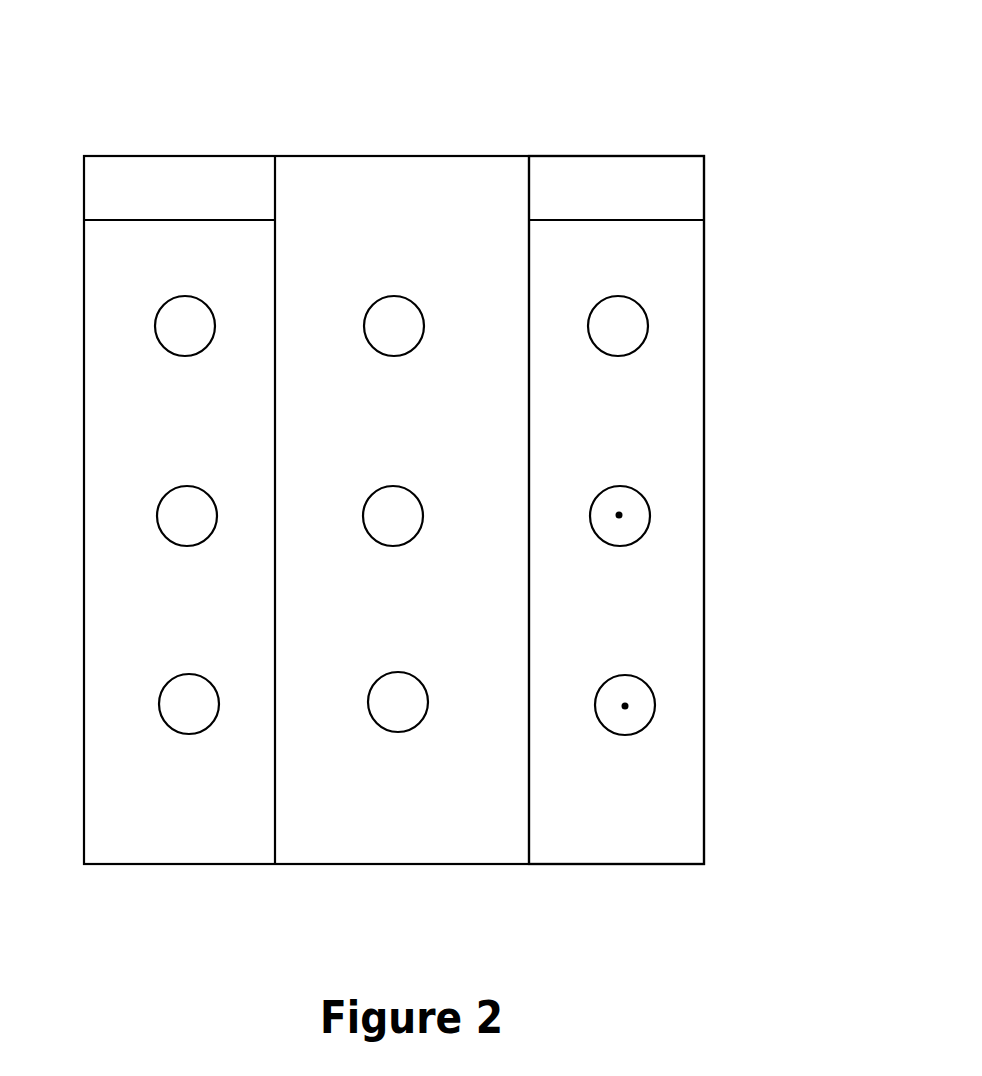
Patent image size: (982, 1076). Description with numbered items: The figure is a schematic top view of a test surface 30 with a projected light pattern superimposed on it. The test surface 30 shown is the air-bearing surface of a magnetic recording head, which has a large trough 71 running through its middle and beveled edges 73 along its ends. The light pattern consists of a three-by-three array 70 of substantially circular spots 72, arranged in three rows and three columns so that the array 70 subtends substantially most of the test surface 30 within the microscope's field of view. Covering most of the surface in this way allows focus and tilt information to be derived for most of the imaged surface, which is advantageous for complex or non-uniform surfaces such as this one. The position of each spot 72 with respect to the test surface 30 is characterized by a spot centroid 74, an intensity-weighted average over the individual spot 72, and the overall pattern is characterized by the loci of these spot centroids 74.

The test surface 30 is at (649, 253).
The array of spots 70 is at (155, 300).
The trough 71 is at (467, 847).
The circular spot 72 is at (655, 692).
The beveled edges 73 is at (654, 178).
The spot centroid 74 is at (620, 515).